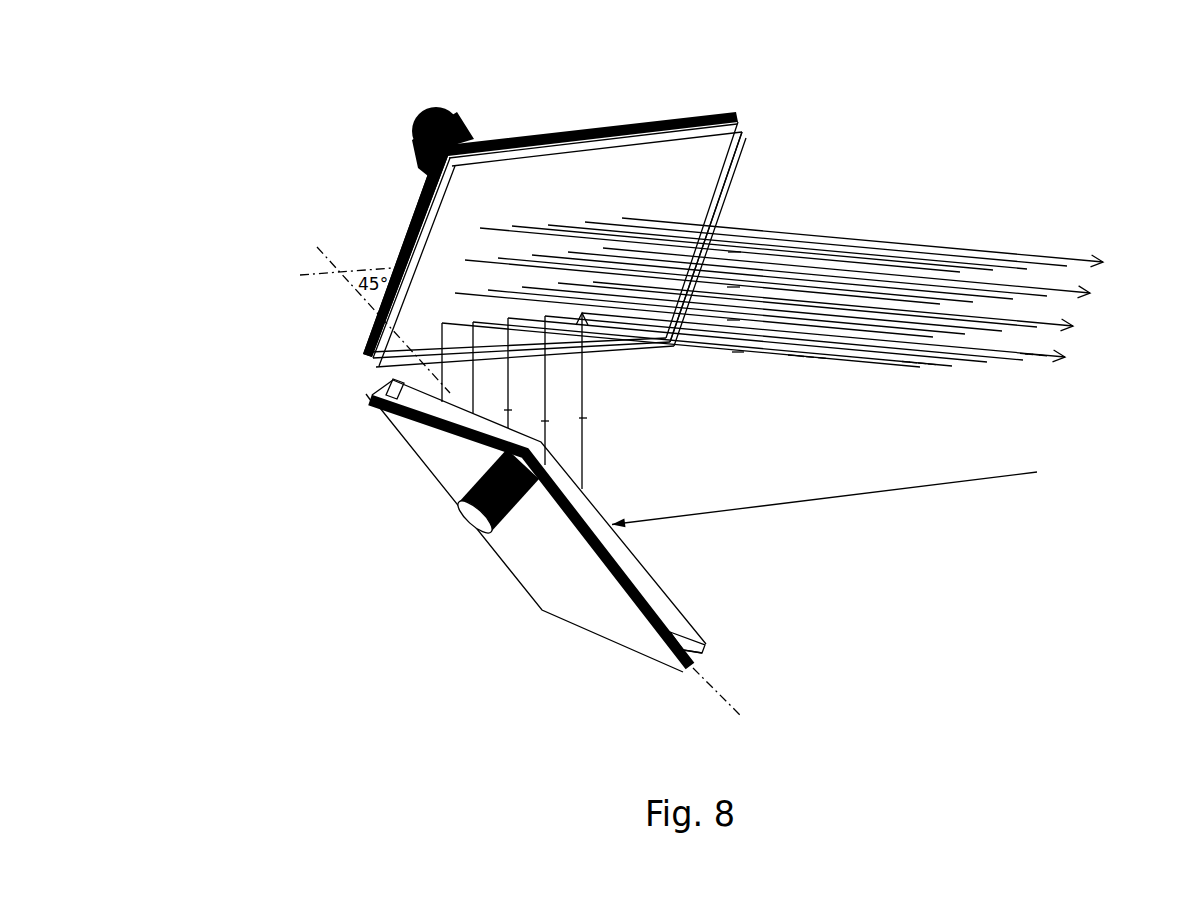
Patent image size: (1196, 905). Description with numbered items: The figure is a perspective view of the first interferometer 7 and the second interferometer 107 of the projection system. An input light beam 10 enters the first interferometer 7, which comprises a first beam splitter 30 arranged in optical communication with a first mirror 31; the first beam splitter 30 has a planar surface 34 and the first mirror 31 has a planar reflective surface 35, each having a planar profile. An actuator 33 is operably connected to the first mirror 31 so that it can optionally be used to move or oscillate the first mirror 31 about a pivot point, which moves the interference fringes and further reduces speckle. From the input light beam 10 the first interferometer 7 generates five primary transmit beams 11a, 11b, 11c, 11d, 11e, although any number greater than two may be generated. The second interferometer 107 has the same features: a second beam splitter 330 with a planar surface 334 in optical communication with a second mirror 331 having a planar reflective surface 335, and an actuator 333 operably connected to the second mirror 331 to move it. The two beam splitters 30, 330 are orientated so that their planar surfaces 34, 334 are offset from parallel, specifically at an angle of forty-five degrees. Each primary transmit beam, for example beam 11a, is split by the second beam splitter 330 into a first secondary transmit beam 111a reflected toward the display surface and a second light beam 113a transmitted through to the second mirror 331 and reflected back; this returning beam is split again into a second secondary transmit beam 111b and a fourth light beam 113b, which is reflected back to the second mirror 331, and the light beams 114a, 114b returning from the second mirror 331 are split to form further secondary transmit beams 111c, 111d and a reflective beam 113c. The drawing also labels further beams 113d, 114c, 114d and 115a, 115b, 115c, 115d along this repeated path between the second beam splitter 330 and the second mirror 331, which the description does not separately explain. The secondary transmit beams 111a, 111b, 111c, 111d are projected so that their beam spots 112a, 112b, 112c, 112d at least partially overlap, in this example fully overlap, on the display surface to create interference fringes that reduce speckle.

The first interferometer 7 is at (484, 552).
The input light beam 10 is at (980, 480).
The primary transmit beam 11a is at (583, 418).
The primary transmit beam 11b is at (546, 422).
The primary transmit beam 11c is at (508, 411).
The primary transmit beam 11d is at (380, 408).
The primary transmit beam 11e is at (390, 383).
The first beam splitter 30 is at (707, 632).
The first mirror 31 is at (583, 618).
The actuator 33 is at (475, 522).
The planar surface 34 is at (680, 611).
The planar reflective surface 35 is at (702, 628).
The second interferometer 107 is at (572, 194).
The first secondary transmit beam 111a is at (787, 343).
The second secondary transmit beam 111b is at (799, 312).
The secondary transmit beam 111c is at (810, 278).
The secondary transmit beam 111d is at (824, 248).
The beam spot 112a is at (1043, 358).
The beam spot 112b is at (1036, 357).
The beam spot 112c is at (1029, 357).
The beam spot 112d is at (1024, 356).
The second light beam 113a is at (932, 361).
The fourth light beam 113b is at (922, 361).
The reflective beam 113c is at (913, 360).
The ray position 113d is at (906, 360).
The light beam 114a is at (822, 358).
The light beam 114b is at (810, 358).
The ray position 114c is at (800, 358).
The ray position 114d is at (792, 358).
The ray position 115a is at (738, 352).
The ray position 115b is at (732, 320).
The ray position 115c is at (731, 288).
The ray position 115d is at (739, 253).
The second beam splitter 330 is at (738, 163).
The second mirror 331 is at (704, 113).
The actuator 333 is at (433, 108).
The planar surface 334 is at (737, 188).
The planar reflective surface 335 is at (422, 190).